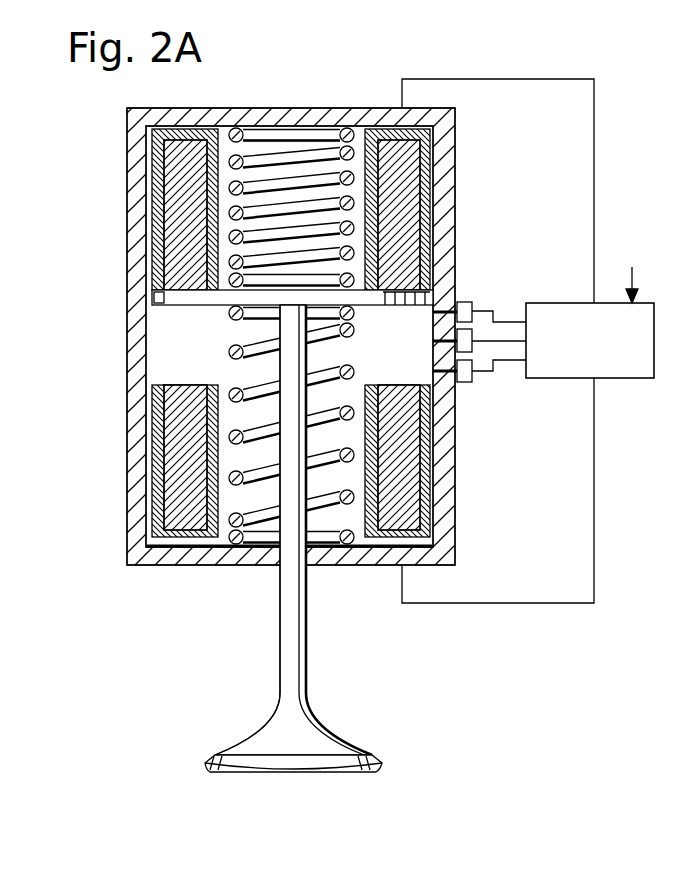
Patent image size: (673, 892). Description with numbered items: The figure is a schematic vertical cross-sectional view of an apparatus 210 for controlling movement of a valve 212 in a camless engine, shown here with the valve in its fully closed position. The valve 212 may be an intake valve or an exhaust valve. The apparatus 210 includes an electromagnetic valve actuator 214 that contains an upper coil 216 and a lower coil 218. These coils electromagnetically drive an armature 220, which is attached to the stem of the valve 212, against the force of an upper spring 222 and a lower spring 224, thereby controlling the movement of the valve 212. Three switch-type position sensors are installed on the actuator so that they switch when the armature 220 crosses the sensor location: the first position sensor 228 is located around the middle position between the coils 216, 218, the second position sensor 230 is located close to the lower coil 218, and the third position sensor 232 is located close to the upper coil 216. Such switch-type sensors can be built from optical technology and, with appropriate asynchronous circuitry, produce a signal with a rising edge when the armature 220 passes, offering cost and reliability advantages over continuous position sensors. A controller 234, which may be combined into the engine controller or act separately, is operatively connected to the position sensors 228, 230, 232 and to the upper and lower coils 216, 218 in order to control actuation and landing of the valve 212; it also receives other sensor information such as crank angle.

The apparatus 210 is at (450, 60).
The valve 212 is at (340, 738).
The electromagnetic valve actuator 214 is at (128, 350).
The upper coil 216 is at (172, 213).
The lower coil 218 is at (172, 466).
The armature 220 is at (172, 297).
The upper spring 222 is at (293, 135).
The lower spring 224 is at (325, 500).
The first position sensor 228 is at (473, 338).
The second position sensor 230 is at (465, 383).
The third position sensor 232 is at (460, 302).
The controller 234 is at (628, 380).